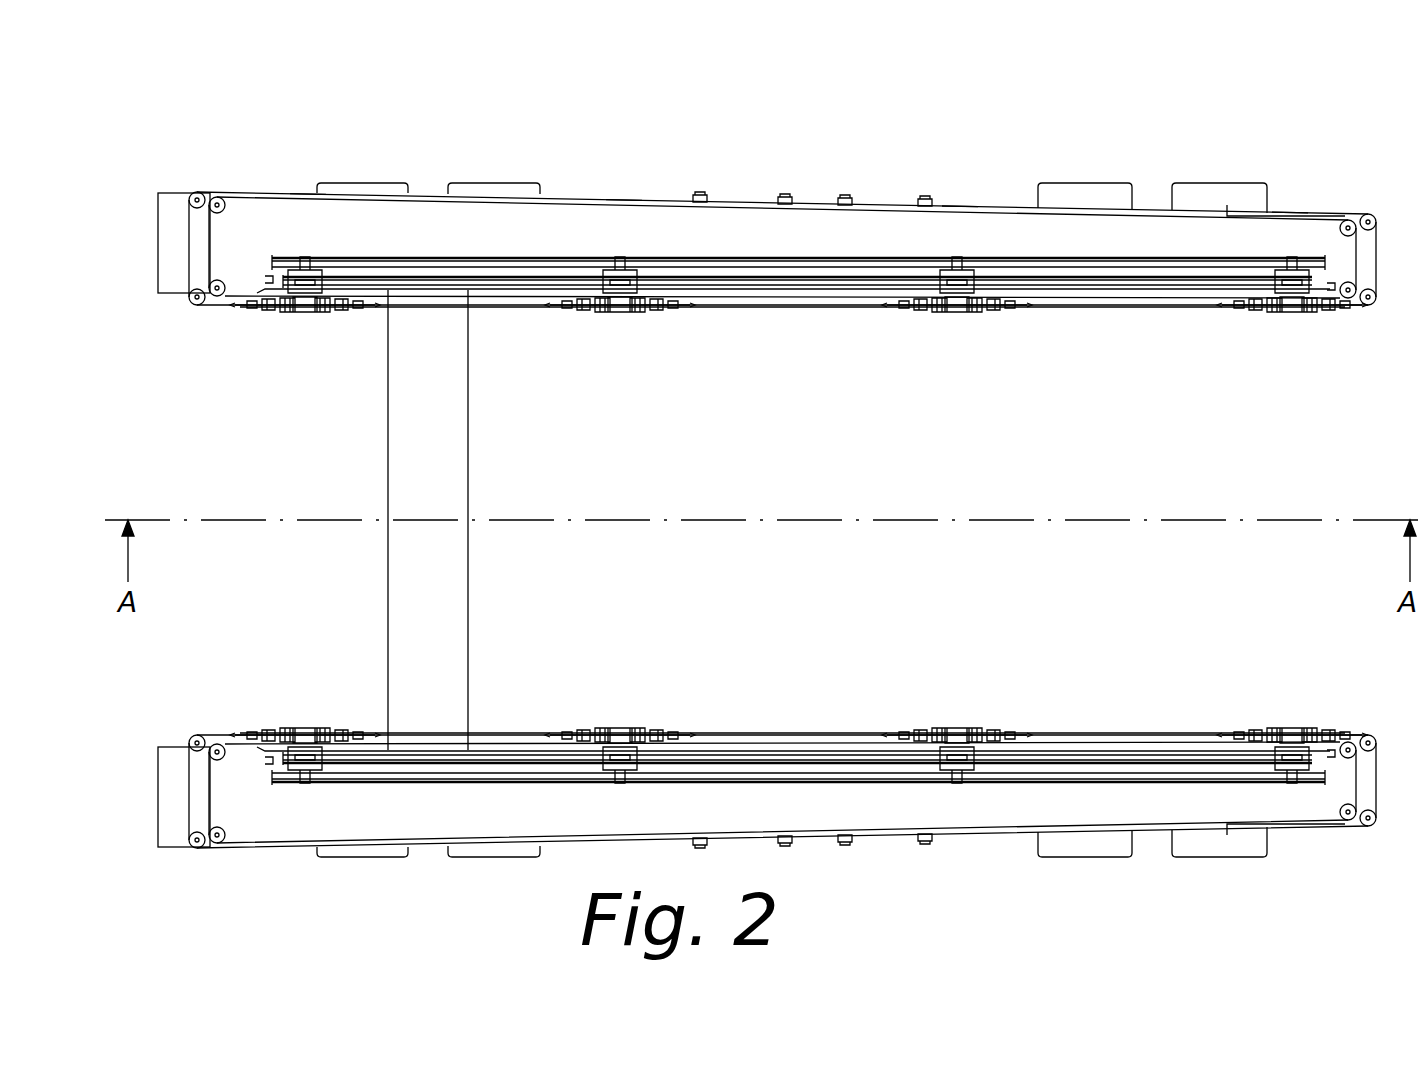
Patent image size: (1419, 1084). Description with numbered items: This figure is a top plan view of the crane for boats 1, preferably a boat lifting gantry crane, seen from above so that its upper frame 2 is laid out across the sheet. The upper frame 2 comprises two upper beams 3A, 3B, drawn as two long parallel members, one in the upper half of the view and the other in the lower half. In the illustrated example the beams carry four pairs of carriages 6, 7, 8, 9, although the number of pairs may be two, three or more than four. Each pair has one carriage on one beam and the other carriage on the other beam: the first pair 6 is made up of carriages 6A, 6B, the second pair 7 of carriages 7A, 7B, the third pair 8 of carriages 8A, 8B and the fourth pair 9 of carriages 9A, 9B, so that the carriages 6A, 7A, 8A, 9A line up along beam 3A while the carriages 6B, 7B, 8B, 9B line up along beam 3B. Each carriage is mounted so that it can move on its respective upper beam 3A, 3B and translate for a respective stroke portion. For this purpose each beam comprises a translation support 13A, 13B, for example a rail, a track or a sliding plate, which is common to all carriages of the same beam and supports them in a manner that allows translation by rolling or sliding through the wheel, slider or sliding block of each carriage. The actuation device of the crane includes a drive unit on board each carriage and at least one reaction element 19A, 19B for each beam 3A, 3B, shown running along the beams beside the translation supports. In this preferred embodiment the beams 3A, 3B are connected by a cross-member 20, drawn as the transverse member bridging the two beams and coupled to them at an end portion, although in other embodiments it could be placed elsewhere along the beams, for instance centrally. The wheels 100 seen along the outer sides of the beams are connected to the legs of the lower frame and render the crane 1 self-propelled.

The crane for boats 1 is at (1343, 146).
The upper frame 2 is at (1340, 450).
The upper beam 3A is at (775, 232).
The upper beam 3B is at (880, 822).
The pair of carriages 6 is at (306, 170).
The pair of carriages 7 is at (622, 170).
The pair of carriages 8 is at (960, 172).
The pair of carriages 9 is at (1290, 188).
The carriage 6A is at (300, 320).
The carriage 7A is at (620, 322).
The carriage 8A is at (957, 322).
The carriage 9A is at (1290, 322).
The carriage 6B is at (303, 730).
The carriage 7B is at (617, 728).
The carriage 8B is at (960, 728).
The carriage 9B is at (1292, 728).
The translation support 13A is at (785, 284).
The translation support 13B is at (790, 756).
The reaction element 19A is at (510, 284).
The reaction element 19B is at (510, 758).
The cross-member 20 is at (412, 482).
The wheels 100 is at (371, 188).